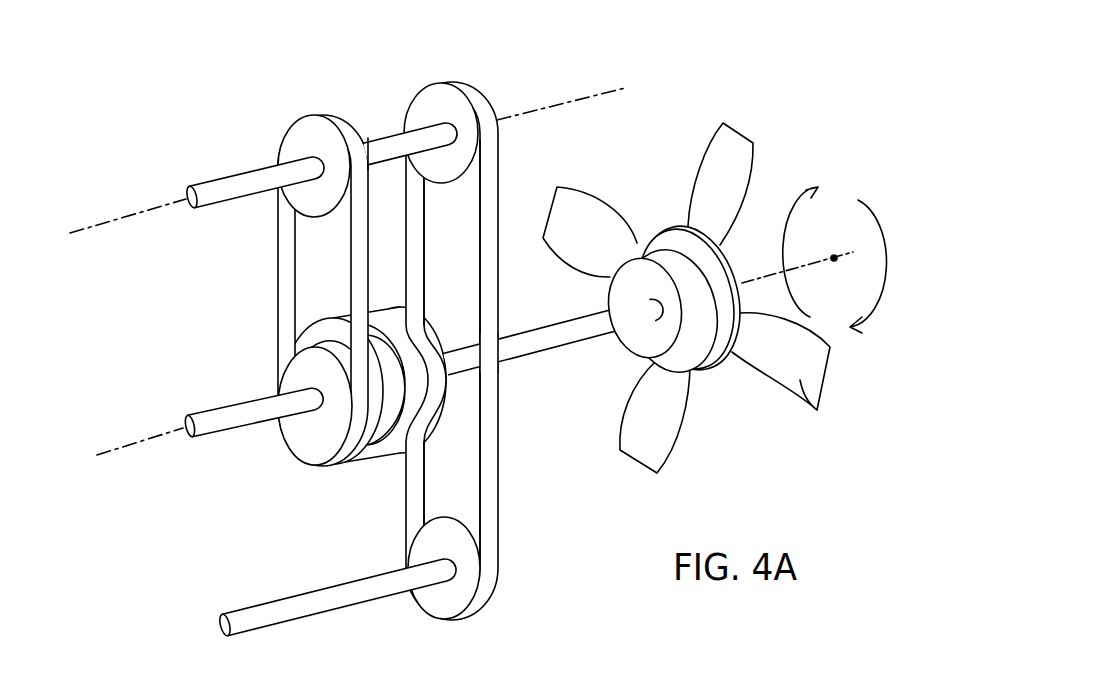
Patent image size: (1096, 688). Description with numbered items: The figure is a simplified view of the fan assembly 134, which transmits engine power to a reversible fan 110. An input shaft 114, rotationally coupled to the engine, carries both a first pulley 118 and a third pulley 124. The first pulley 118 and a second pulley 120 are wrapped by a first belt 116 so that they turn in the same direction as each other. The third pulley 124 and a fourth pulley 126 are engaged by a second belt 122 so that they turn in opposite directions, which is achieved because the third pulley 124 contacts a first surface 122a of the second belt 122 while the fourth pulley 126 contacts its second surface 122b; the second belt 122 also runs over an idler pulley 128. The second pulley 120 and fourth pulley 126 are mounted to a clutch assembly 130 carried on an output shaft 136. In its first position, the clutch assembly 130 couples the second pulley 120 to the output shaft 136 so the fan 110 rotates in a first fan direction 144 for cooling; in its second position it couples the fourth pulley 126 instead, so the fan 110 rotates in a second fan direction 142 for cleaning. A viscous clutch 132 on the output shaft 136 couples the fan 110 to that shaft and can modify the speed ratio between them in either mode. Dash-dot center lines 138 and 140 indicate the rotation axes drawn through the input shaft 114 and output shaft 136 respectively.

The fan 110 is at (817, 410).
The input shaft 114 is at (225, 177).
The first belt 116 is at (278, 282).
The first pulley 118 is at (308, 133).
The second pulley 120 is at (315, 422).
The second belt 122 is at (499, 381).
The first surface of second belt 122a is at (417, 482).
The second surface of second belt 122b is at (490, 418).
The third pulley 124 is at (423, 102).
The fourth pulley 126 is at (398, 440).
The idler pulley 128 is at (465, 587).
The clutch assembly 130 is at (312, 492).
The viscous clutch 132 is at (692, 330).
The fan assembly 134 is at (707, 50).
The output shaft 136 is at (220, 408).
The first rotation axis 138 is at (96, 226).
The second rotation axis 140 is at (122, 447).
The second fan direction 142 is at (877, 317).
The first fan direction 144 is at (800, 190).